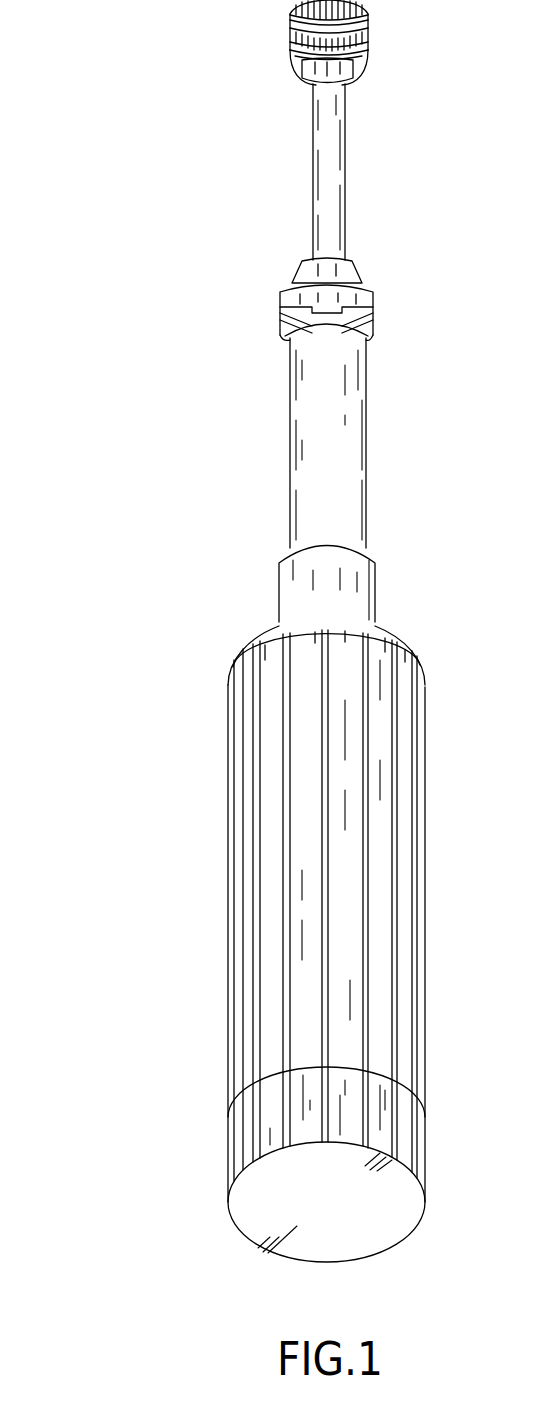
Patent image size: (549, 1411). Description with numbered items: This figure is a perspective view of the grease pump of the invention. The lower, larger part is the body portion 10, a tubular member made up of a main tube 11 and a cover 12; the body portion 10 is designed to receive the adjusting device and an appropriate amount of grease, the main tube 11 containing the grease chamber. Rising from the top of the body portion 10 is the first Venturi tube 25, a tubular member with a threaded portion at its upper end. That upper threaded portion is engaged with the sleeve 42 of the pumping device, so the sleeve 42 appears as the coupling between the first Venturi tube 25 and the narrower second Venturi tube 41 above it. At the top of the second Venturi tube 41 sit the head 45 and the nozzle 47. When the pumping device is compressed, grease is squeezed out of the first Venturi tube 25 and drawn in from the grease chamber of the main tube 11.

The body portion 10 is at (172, 978).
The main tube 11 is at (228, 815).
The cover 12 is at (228, 1152).
The first Venturi tube 25 is at (290, 411).
The second Venturi tube 41 is at (343, 166).
The sleeve 42 is at (375, 305).
The head 45 is at (300, 95).
The nozzle 47 is at (368, 30).